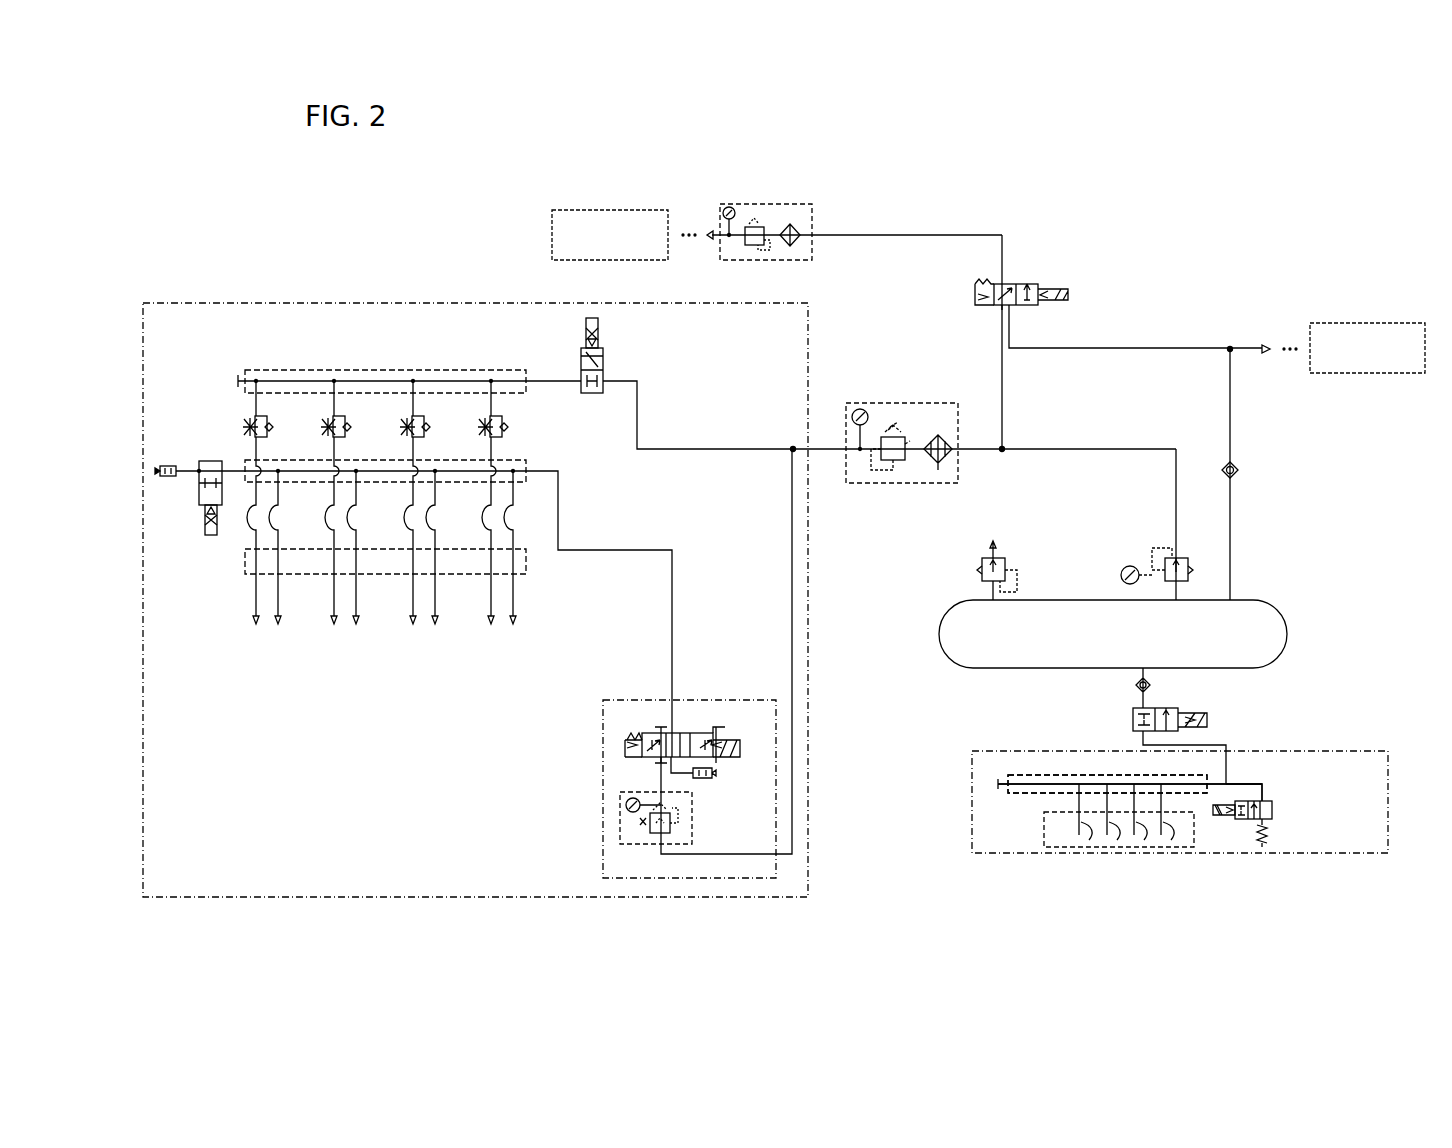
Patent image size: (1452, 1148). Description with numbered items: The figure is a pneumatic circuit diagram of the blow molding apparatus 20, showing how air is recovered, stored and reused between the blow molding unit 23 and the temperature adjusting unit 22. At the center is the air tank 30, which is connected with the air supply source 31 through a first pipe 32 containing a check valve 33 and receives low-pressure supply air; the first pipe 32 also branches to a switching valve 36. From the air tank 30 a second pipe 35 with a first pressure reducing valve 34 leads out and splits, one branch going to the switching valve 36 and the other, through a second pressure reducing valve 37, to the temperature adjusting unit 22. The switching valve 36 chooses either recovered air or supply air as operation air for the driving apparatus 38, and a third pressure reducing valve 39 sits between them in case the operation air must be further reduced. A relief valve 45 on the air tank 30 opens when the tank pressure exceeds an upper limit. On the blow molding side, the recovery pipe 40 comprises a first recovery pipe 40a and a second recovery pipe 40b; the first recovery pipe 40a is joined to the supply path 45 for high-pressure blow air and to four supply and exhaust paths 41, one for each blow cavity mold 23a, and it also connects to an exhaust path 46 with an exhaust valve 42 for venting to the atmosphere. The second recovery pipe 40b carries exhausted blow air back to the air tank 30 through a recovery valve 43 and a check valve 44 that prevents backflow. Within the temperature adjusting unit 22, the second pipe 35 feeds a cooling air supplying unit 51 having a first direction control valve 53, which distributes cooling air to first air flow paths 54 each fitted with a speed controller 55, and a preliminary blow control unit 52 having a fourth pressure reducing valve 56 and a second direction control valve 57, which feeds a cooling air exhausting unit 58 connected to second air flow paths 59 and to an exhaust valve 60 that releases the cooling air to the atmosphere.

The blow molding apparatus 20 is at (1262, 185).
The temperature adjusting unit 22 is at (810, 692).
The blow molding unit 23 is at (1330, 751).
The blow cavity mold 23a is at (1044, 830).
The air tank 30 is at (1289, 632).
The air supply source 31 is at (1368, 323).
The first pipe 32 is at (1233, 392).
The check valve 33 is at (1240, 467).
The first pressure reducing valve 34 is at (1180, 556).
The second pipe 35 is at (1098, 451).
The switching valve 36 is at (1030, 284).
The second pressure reducing valve 37 is at (908, 403).
The driving apparatus 38 is at (612, 210).
The third pressure reducing valve 39 is at (760, 204).
The recovery pipe 40 is at (1155, 783).
The first recovery pipe 40a is at (1107, 784).
The second recovery pipe 40b is at (1130, 792).
The supply and exhaust path 41 is at (1093, 845).
The exhaust valve 42 is at (1240, 822).
The recovery valve 43 is at (1131, 722).
The check valve 44 is at (1138, 689).
The supply path / relief valve 45 is at (1008, 560).
The exhaust path 46 is at (1262, 784).
The cooling air supplying unit 51 is at (435, 370).
The preliminary blow control unit 52 is at (752, 700).
The first direction control valve 53 is at (605, 365).
The first air flow path 54 is at (254, 590).
The speed controller 55 is at (274, 424).
The fourth pressure reducing valve 56 is at (694, 812).
The second direction control valve 57 is at (688, 733).
The cooling air exhausting unit 58 is at (527, 466).
The second air flow path 59 is at (280, 605).
The exhaust valve 60 is at (196, 499).